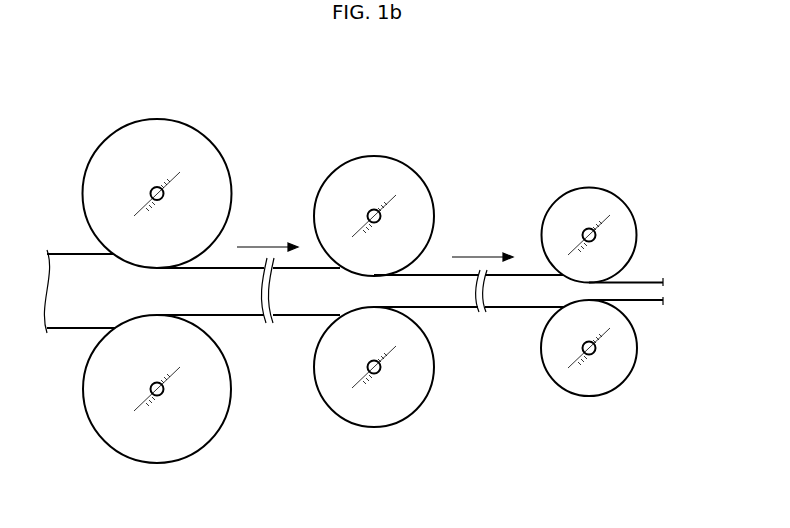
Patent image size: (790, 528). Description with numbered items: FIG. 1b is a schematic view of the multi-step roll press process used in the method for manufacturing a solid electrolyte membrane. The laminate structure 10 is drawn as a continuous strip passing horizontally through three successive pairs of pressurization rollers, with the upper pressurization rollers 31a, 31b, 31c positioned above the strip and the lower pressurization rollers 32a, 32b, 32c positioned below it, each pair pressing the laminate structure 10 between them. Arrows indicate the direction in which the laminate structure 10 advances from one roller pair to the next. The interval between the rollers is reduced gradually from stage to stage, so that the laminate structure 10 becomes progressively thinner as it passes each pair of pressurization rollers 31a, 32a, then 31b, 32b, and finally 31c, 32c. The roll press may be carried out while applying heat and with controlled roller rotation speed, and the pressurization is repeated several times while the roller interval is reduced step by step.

The laminate structure 10 is at (663, 291).
The pressurization roller 31a is at (590, 187).
The pressurization roller 31b is at (374, 156).
The pressurization roller 31c is at (157, 119).
The pressurization roller 32a is at (590, 398).
The pressurization roller 32b is at (374, 428).
The pressurization roller 32c is at (157, 463).